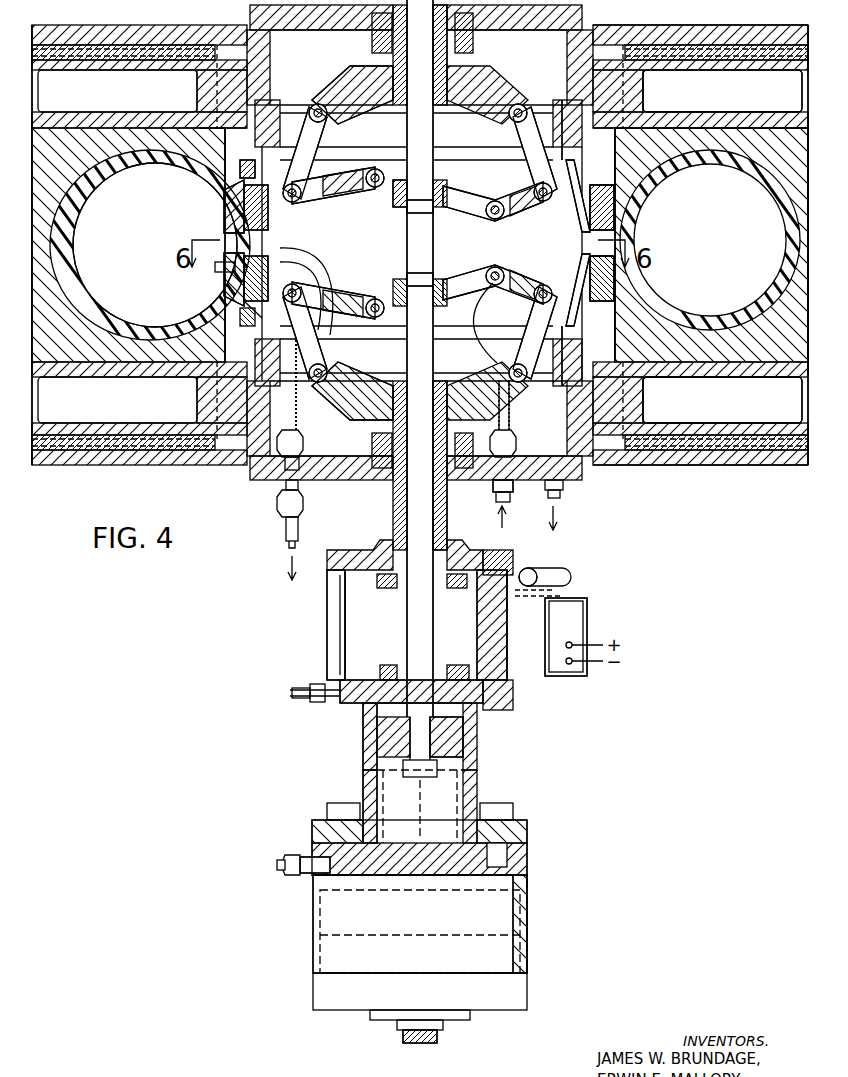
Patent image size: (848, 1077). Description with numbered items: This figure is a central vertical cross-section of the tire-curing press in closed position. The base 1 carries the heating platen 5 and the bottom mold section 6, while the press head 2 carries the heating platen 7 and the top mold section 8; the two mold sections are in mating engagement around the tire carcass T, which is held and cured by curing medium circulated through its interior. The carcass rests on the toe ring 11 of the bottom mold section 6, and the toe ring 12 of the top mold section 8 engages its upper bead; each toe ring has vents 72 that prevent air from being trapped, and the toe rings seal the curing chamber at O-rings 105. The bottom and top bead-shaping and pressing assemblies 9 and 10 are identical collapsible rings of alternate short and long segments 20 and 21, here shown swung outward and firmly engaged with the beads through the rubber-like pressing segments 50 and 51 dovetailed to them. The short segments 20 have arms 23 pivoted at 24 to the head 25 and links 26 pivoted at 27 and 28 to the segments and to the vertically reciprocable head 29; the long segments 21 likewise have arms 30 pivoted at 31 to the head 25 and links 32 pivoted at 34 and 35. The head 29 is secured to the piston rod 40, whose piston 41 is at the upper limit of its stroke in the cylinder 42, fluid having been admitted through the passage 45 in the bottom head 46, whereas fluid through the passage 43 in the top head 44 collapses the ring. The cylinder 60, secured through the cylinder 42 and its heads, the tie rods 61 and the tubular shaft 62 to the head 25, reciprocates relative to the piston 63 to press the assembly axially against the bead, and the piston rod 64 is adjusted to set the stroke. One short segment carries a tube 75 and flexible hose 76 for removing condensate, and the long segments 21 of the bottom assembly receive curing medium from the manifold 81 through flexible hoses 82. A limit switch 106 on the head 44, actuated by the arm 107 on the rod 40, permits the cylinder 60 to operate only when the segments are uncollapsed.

The base 1 is at (722, 463).
The press head 2 is at (739, 26).
The heating platen 5 is at (727, 418).
The bottom mold section 6 is at (768, 346).
The heating platen 7 is at (753, 103).
The top mold section 8 is at (762, 146).
The bead-shaping and pressing assembly 9 is at (461, 274).
The bead-shaping and pressing assembly 10 is at (408, 212).
The toe ring 11 is at (248, 318).
The toe ring 12 is at (246, 167).
The short arcuate segments 20 is at (227, 268).
The long arcuate segments 21 is at (616, 283).
The arms 23 is at (293, 357).
The pivot 24 is at (319, 382).
The head 25 is at (355, 395).
The links 26 is at (343, 292).
The pivot 27 is at (300, 300).
The pivot 28 is at (375, 299).
The vertically reciprocable head 29 is at (416, 275).
The arms 30 is at (532, 322).
The pivot 31 is at (522, 376).
The links 32 is at (522, 272).
The pivot 34 is at (535, 293).
The pivot 35 is at (493, 268).
The piston rod 40 is at (434, 350).
The piston 41 is at (470, 738).
The cylinder 42 is at (363, 775).
The passage 43 is at (356, 698).
The top head 44 is at (340, 684).
The passage 45 is at (305, 870).
The bottom head 46 is at (530, 848).
The short arcuate bead-shaping and pressing segments 50 is at (225, 290).
The long arcuate bead-shaping and pressing segments 51 is at (616, 295).
The cylinder 60 is at (528, 926).
The tie rods 61 is at (500, 645).
The tubular shaft 62 is at (448, 520).
The piston 63 is at (520, 910).
The piston rod 64 is at (440, 1040).
The vents 72 is at (581, 299).
The tube 75 is at (217, 267).
The flexible hose 76 is at (327, 262).
The manifold 81 is at (512, 462).
The flexible hoses 82 is at (511, 413).
The O-rings 105 is at (592, 345).
The limit switch 106 is at (582, 617).
The arm 107 is at (523, 593).
The tire carcass T is at (88, 210).